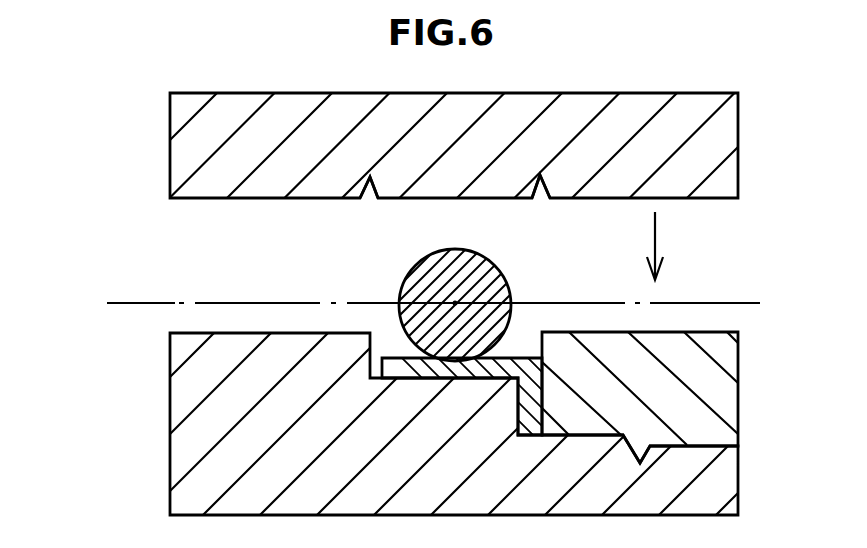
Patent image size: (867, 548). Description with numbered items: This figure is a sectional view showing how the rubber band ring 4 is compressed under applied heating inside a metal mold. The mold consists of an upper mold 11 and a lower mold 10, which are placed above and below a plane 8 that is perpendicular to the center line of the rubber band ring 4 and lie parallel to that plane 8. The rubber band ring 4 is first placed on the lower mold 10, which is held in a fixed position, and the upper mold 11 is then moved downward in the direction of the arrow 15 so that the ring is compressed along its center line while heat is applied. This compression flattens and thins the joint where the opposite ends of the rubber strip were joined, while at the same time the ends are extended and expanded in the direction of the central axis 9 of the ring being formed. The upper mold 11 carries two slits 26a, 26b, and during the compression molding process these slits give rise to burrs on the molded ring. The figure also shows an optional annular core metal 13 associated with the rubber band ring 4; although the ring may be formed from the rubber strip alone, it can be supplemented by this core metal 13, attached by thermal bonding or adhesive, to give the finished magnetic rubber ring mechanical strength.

The rubber band ring 4 is at (417, 263).
The plane 8 is at (143, 303).
The central axis 9 is at (455, 303).
The lower mold 10 is at (170, 390).
The upper mold 11 is at (170, 122).
The annular core metal 13 is at (375, 376).
The arrow 15 is at (655, 246).
The slit 26a is at (368, 199).
The slit 26b is at (538, 200).